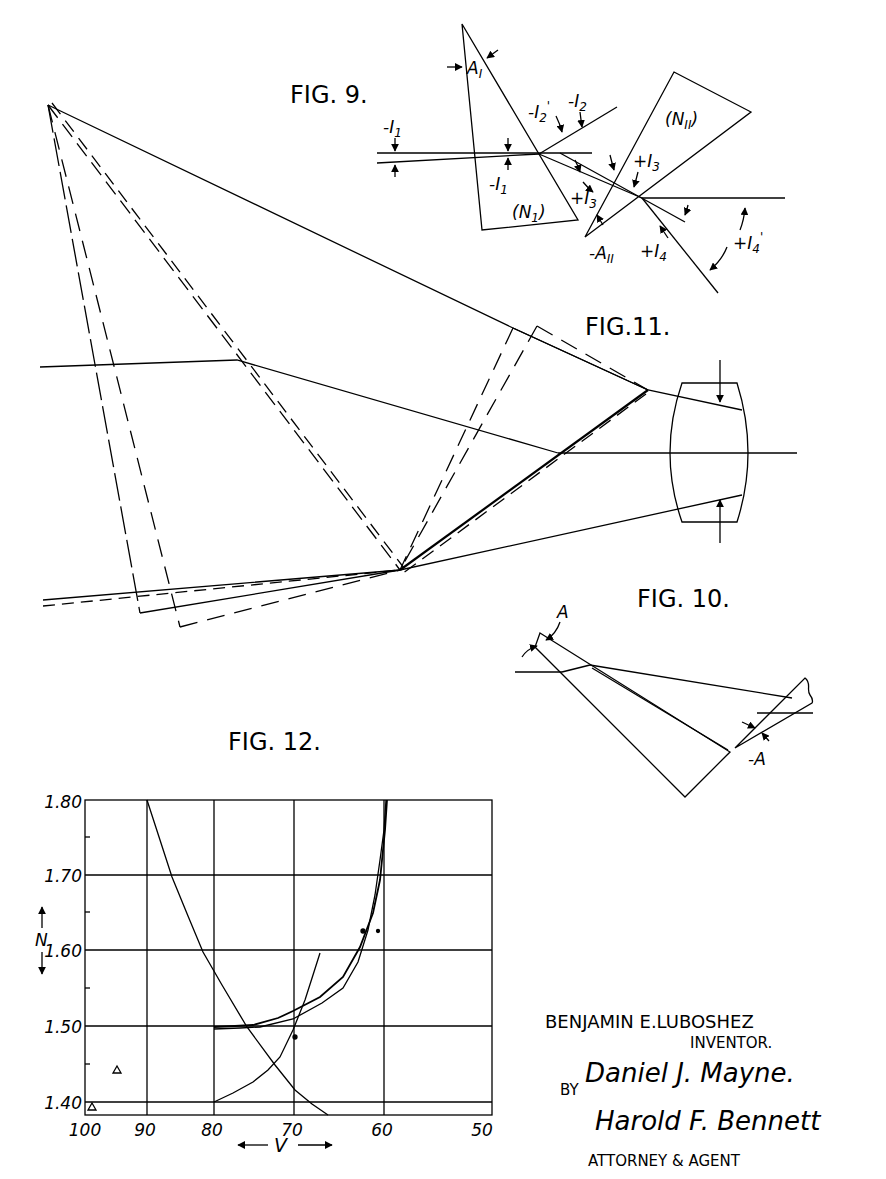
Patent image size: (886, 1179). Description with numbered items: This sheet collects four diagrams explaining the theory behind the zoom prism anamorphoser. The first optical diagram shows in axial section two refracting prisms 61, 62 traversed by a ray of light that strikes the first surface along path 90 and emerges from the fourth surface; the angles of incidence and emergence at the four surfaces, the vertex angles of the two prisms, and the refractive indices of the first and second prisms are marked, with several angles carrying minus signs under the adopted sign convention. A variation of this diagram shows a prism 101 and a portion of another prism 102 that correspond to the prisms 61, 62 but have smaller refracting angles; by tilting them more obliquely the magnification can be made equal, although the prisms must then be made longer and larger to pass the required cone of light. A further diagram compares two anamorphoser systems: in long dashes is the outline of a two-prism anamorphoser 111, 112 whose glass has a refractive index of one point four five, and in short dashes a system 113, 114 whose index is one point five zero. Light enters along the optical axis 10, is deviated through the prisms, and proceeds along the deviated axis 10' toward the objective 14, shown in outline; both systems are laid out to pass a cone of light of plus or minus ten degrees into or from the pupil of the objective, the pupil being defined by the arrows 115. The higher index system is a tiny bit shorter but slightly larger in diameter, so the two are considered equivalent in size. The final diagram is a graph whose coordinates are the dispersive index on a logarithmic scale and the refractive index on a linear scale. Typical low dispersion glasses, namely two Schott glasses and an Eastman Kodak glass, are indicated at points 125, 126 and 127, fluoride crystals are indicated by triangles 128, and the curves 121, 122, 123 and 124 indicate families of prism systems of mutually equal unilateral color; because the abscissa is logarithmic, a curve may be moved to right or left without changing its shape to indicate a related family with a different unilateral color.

In FIG. 9, the first refracting prism 61 is at (485, 88).
In FIG. 9, the second refracting prism 62 is at (672, 85).
In FIG. 9, the incident ray path 90 is at (415, 153).
In FIG. 11, the optical axis 10 is at (299, 395).
In FIG. 11, the deviated axis 10' is at (677, 472).
In FIG. 11, the objective 14 is at (738, 428).
In FIG. 11, the first prism of low-index anamorphoser 111 is at (118, 496).
In FIG. 11, the second prism of low-index anamorphoser 112 is at (503, 352).
In FIG. 11, the first prism of higher-index system 113 is at (316, 456).
In FIG. 11, the second prism of higher-index system 114 is at (500, 398).
In FIG. 11, the pupil-defining arrows 115 is at (722, 372).
In FIG. 10, the prism with smaller refracting angle 101 is at (605, 705).
In FIG. 10, the portion of second prism 102 is at (792, 700).
In FIG. 12, the curve of equal unilateral color 121 is at (162, 838).
In FIG. 12, the curve of equal unilateral color 122 is at (275, 1020).
In FIG. 12, the curve of equal unilateral color 123 is at (372, 882).
In FIG. 12, the curve of equal unilateral color 124 is at (312, 967).
In FIG. 12, the low dispersion glass point 125 is at (297, 1038).
In FIG. 12, the low dispersion glass point 126 is at (381, 931).
In FIG. 12, the low dispersion glass point 127 is at (361, 930).
In FIG. 12, the fluoride crystal triangles 128 is at (133, 1053).